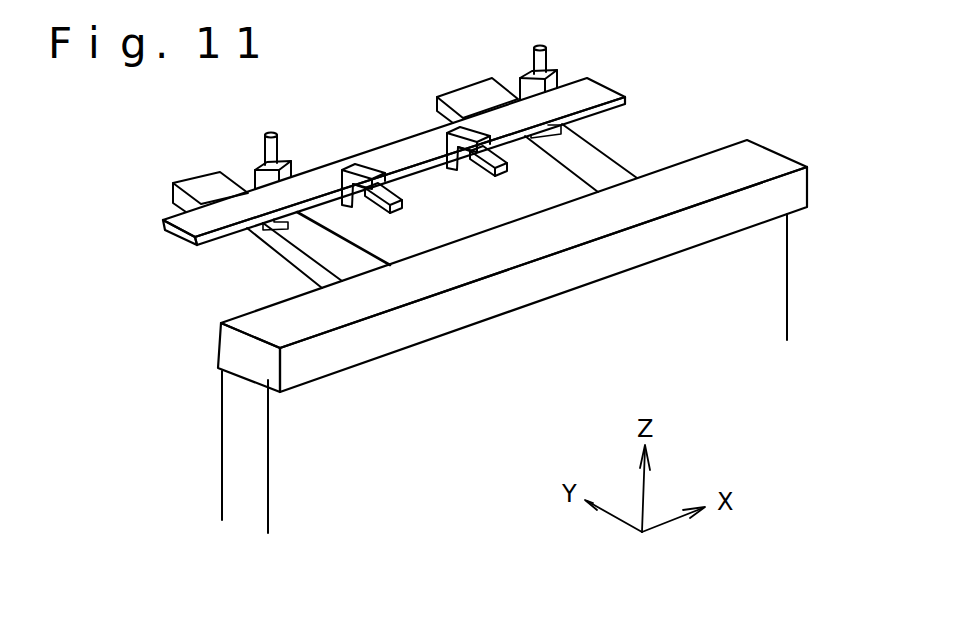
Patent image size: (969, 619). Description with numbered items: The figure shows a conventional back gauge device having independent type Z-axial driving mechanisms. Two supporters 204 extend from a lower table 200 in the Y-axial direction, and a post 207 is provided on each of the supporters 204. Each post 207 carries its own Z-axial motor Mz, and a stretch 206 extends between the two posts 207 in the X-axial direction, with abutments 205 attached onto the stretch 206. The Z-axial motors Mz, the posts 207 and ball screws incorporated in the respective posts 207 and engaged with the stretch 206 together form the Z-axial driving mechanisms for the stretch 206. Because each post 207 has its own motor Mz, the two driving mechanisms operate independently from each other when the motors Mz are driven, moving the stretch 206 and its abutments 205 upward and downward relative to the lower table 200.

The lower table 200 is at (748, 294).
The supporters 204 is at (313, 250).
The abutments 205 is at (385, 191).
The stretch 206 is at (592, 95).
The posts 207 is at (256, 177).
The Z-axial motor Mz is at (278, 158).